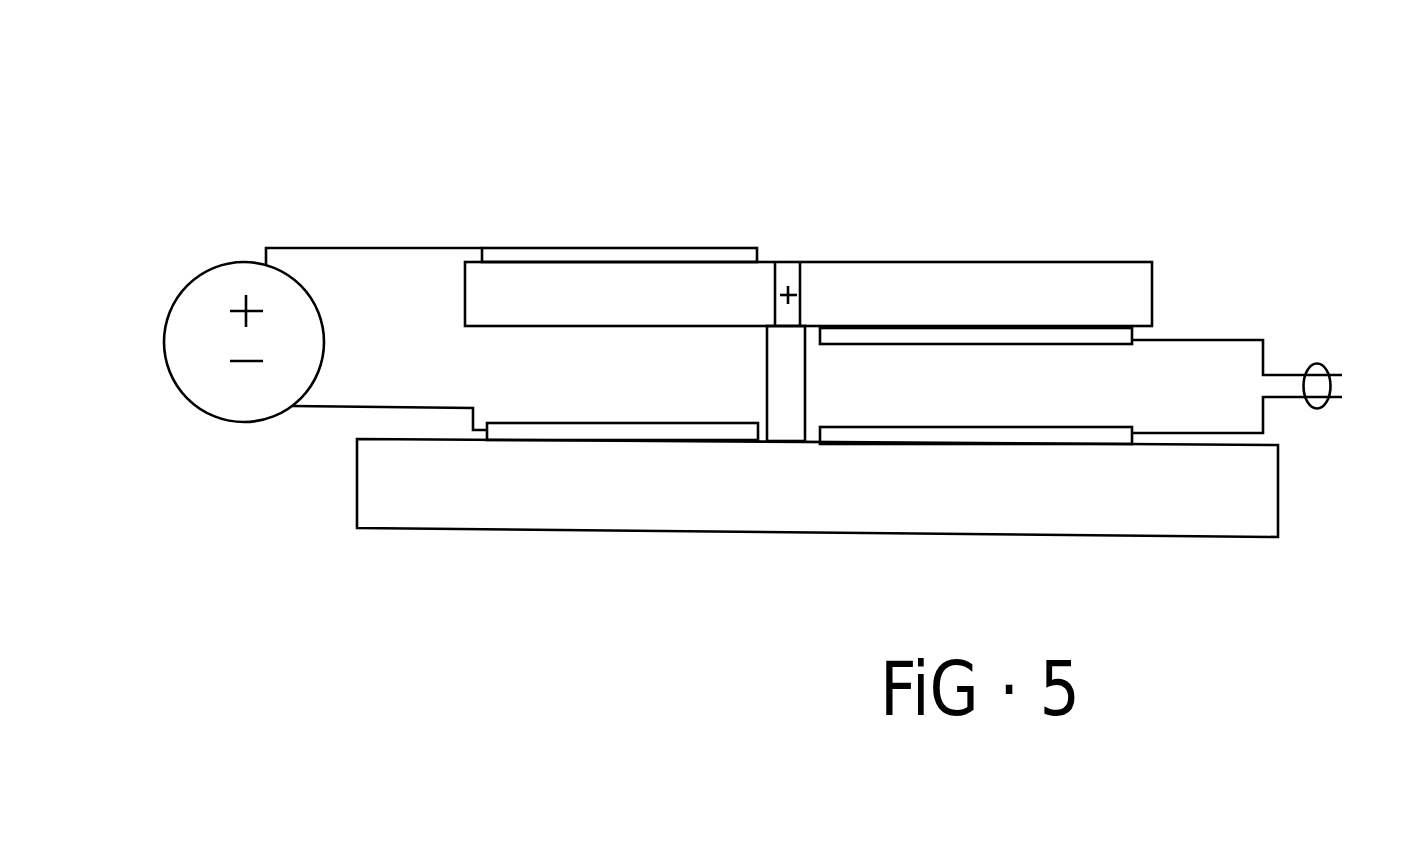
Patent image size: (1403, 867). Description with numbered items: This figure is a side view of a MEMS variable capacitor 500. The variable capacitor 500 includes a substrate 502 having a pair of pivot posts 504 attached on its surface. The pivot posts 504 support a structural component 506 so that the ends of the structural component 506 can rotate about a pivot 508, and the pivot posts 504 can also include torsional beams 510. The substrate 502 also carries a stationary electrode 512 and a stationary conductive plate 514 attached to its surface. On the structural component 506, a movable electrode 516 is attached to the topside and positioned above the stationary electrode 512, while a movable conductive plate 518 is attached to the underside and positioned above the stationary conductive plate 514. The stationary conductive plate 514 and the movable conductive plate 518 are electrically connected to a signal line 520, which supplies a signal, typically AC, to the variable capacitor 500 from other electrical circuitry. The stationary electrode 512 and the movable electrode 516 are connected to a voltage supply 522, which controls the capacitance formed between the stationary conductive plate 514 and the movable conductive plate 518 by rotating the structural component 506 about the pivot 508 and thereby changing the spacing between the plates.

The MEMS variable capacitor 500 is at (508, 192).
The substrate 502 is at (1278, 500).
The pivot posts 504 is at (765, 373).
The structural component 506 is at (1152, 300).
The pivot 508 is at (786, 288).
The torsional beams 510 is at (803, 292).
The stationary electrode 512 is at (535, 423).
The stationary conductive plate 514 is at (1030, 425).
The movable electrode 516 is at (600, 248).
The movable conductive plate 518 is at (1017, 343).
The signal line 520 is at (1318, 363).
The voltage supply 522 is at (190, 280).